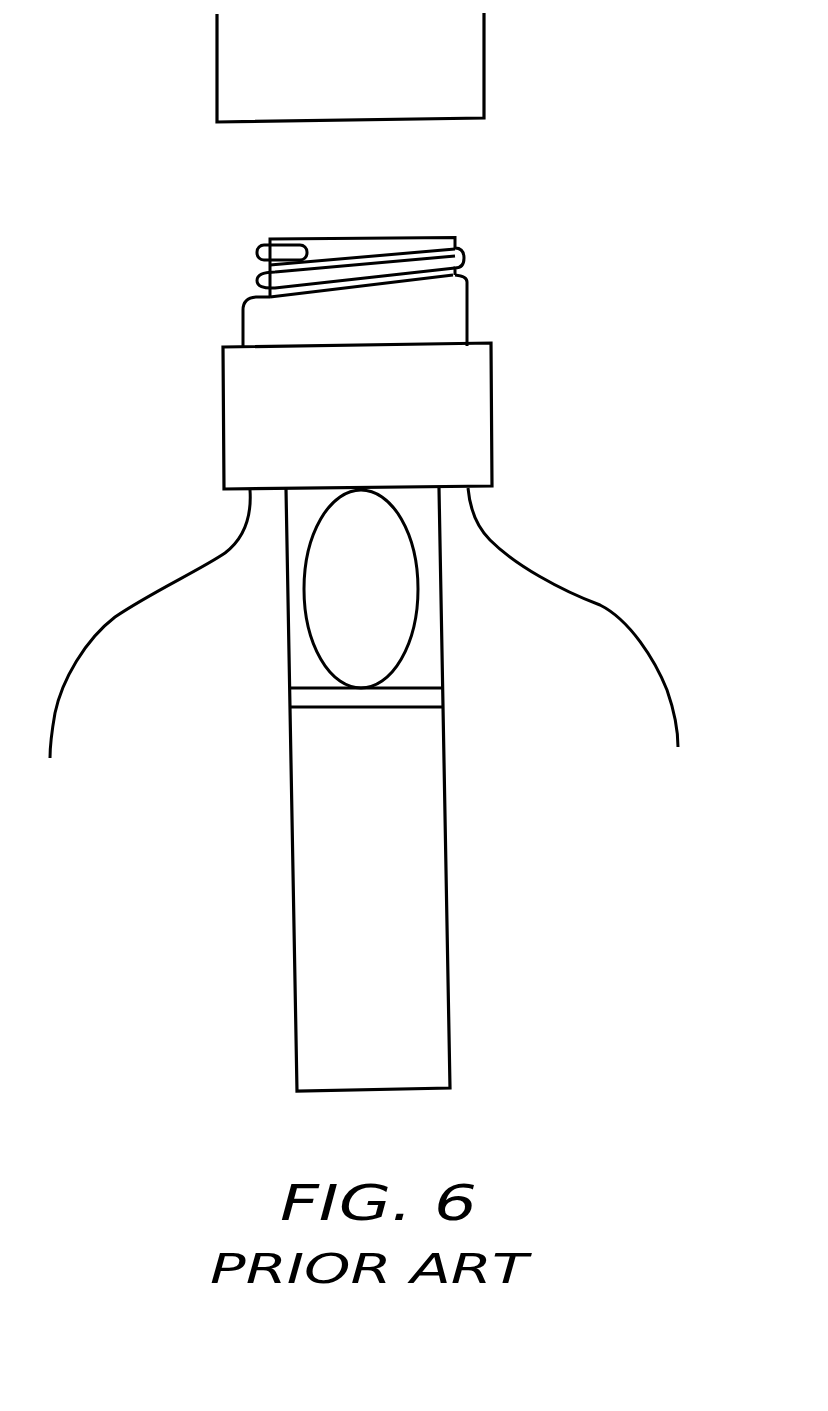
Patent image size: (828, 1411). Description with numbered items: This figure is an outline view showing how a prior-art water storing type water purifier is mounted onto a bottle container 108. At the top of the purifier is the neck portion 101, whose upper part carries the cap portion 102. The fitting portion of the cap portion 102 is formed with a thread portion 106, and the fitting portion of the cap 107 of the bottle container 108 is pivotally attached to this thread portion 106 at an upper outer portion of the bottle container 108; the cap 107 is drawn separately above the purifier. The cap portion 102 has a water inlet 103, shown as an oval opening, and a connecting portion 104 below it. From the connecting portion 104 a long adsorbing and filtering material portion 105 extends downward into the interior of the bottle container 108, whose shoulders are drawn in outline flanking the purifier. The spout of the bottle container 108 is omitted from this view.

The neck portion 101 is at (378, 469).
The cap portion 102 is at (468, 383).
The water inlet 103 is at (398, 555).
The connecting portion 104 is at (445, 680).
The adsorbing and filtering material portion 105 is at (425, 942).
The thread portion 106 is at (448, 307).
The cap of bottle container 107 is at (465, 62).
The bottle container 108 is at (605, 608).